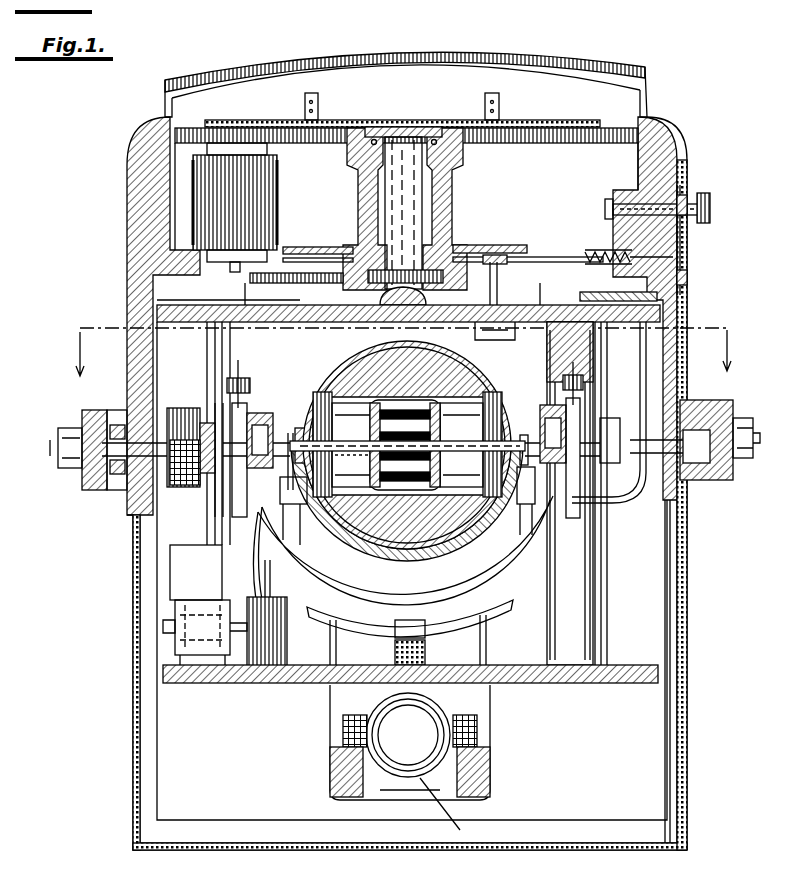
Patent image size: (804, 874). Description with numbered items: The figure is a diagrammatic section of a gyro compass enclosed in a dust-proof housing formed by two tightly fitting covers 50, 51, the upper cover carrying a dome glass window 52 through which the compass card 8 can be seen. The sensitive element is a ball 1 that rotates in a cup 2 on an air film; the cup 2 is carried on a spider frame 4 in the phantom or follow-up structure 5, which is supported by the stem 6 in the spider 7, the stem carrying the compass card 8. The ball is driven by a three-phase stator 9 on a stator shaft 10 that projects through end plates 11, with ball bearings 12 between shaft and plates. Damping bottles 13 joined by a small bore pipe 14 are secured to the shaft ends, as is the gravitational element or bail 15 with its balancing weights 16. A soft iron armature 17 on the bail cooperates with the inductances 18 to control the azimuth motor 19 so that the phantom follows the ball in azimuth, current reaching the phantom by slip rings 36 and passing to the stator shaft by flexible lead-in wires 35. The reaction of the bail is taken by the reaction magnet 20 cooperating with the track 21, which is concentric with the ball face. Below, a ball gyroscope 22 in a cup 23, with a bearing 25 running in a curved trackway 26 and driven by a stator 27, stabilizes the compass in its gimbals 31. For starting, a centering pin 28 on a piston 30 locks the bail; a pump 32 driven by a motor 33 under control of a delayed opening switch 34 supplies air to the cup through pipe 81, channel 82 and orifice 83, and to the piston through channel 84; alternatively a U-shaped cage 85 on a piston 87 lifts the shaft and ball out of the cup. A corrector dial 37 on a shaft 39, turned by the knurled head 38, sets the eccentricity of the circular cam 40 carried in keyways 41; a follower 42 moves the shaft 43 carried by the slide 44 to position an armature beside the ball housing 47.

The ball 1 is at (460, 366).
The cup 2 is at (475, 528).
The spider frame 4 is at (612, 522).
The phantom or follow-up structure 5 is at (607, 660).
The stem 6 is at (408, 125).
The spider 7 is at (565, 138).
The compass card 8 is at (540, 122).
The three-phase A. C. stator 9 is at (398, 400).
The stator shaft 10 is at (455, 440).
The end plates 11 is at (338, 410).
The ball bearings 12 is at (345, 470).
The damping bottles 13 is at (265, 425).
The small bore pipe 14 is at (590, 553).
The gravitational element or bail 15 is at (318, 578).
The balancing weights 16 is at (245, 382).
The soft iron armature 17 is at (212, 488).
The transformer or inductances 18 is at (180, 408).
The azimuth motor 19 is at (277, 172).
The reaction magnet 20 is at (440, 630).
The track 21 is at (408, 640).
The ball gyroscope 22 is at (430, 710).
The cup 23 is at (330, 795).
The bearing 25 is at (435, 809).
The curved trackway or slot 26 is at (490, 757).
The stator 27 is at (343, 733).
The locking or centering pin 28 is at (395, 632).
The piston 30 is at (425, 653).
The gimbals 31 is at (715, 480).
The pump 32 is at (275, 637).
The motor 33 is at (200, 668).
The automatic delayed opening switch 34 is at (222, 562).
The flexible lead-in wires 35 is at (618, 497).
The slip rings 36 is at (618, 287).
The corrector dial 37 is at (687, 236).
The knurled head 38 is at (710, 197).
The shaft 39 is at (600, 250).
The circular cam 40 is at (408, 297).
The keyways 41 is at (318, 258).
The follower 42 is at (500, 255).
The shaft 43 is at (488, 293).
The slide 44 is at (495, 322).
The ball housing 47 is at (330, 383).
The upper cover 50 is at (127, 222).
The lower cover 51 is at (133, 647).
The dome glass window 52 is at (470, 63).
The pipe 81 is at (685, 185).
The channel 82 is at (687, 283).
The orifice 83 is at (295, 322).
The channel 84 is at (282, 683).
The U-shaped cage 85 is at (524, 435).
The piston 87 is at (300, 518).